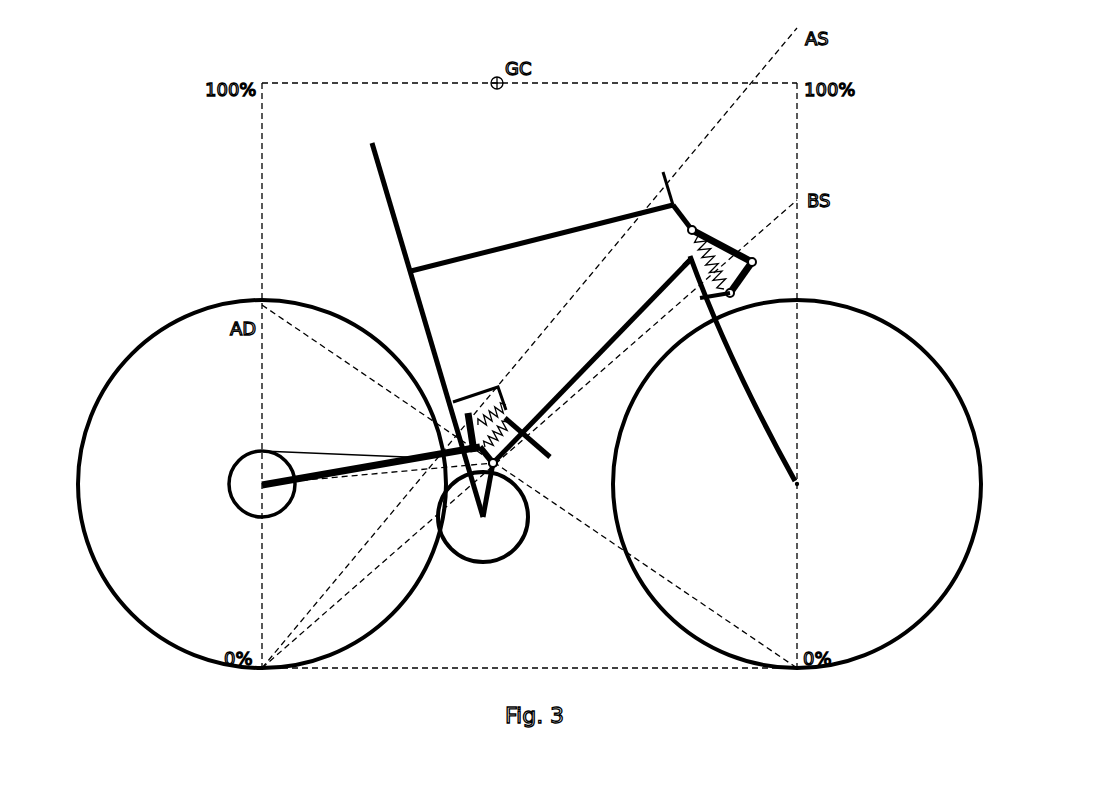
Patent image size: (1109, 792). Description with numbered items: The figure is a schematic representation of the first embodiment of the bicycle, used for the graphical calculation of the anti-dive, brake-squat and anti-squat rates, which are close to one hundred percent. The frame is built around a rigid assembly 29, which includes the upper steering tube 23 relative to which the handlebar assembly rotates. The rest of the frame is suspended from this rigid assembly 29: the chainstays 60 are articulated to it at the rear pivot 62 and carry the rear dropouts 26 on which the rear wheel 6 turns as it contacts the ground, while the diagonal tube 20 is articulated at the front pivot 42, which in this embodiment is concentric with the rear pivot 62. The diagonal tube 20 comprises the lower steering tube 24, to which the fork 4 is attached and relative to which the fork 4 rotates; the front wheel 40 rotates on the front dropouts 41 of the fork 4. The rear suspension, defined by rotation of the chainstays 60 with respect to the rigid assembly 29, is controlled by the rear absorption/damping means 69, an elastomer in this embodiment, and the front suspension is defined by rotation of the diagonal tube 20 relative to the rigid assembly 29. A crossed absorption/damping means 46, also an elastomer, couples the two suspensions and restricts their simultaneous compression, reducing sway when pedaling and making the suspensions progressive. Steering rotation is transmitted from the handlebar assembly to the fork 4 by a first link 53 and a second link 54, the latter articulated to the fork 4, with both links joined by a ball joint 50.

The fork 4 is at (765, 409).
The rear wheel 6 is at (108, 618).
The diagonal tube 20 is at (604, 350).
The upper steering tube 23 is at (668, 202).
The lower steering tube 24 is at (689, 272).
The rear dropouts 26 is at (258, 481).
The rigid assembly 29 is at (484, 256).
The front wheel 40 is at (918, 628).
The front dropouts 41 is at (800, 481).
The front pivot 42 is at (498, 466).
The crossed absorption/damping means 46 is at (525, 437).
The ball joint 50 is at (758, 259).
The first link 53 is at (708, 232).
The second link 54 is at (738, 285).
The chainstays 60 is at (372, 450).
The rear pivot 62 is at (493, 463).
The rear absorption/damping means 69 is at (472, 388).